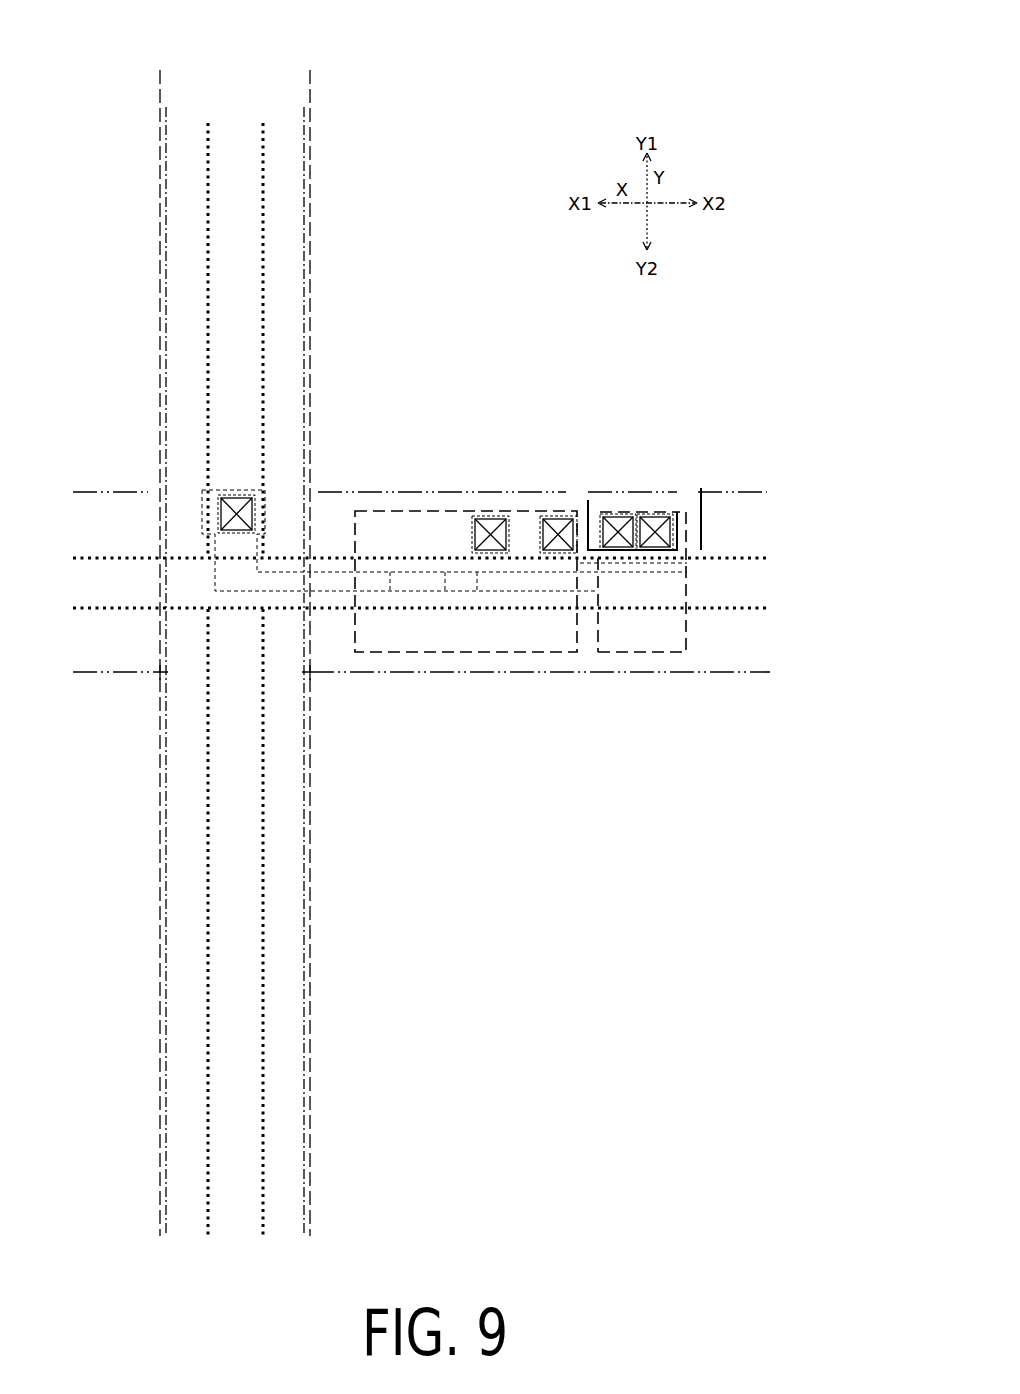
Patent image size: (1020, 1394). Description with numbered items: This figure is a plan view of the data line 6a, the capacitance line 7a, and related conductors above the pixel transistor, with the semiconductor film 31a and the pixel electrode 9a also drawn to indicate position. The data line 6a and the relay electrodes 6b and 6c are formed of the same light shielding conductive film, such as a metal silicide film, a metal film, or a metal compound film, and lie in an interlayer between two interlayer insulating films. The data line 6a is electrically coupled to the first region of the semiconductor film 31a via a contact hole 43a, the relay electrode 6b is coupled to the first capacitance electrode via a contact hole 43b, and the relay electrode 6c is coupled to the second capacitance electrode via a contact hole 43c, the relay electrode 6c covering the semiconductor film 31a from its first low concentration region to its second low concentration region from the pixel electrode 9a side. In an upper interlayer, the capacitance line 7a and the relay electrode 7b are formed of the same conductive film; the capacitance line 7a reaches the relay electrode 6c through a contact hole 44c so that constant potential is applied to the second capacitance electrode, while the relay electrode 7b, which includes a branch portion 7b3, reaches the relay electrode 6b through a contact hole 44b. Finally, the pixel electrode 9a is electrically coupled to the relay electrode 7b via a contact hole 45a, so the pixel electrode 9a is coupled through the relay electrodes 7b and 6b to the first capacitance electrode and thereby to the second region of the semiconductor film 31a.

The data line 6a is at (310, 63).
The capacitance line 7a is at (304, 96).
The pixel electrode 9a is at (206, 153).
The contact hole 43a is at (240, 497).
The relay electrode 6c is at (365, 510).
The contact hole 44c is at (490, 518).
The contact hole 43c is at (555, 518).
The contact hole 44b is at (617, 515).
The contact hole 43b is at (678, 470).
The contact hole 45a is at (650, 513).
The relay electrode 6b is at (665, 505).
The relay electrode 7b is at (704, 505).
The branch portion of second wiring 7b3 is at (703, 530).
The semiconductor film 31a is at (547, 593).